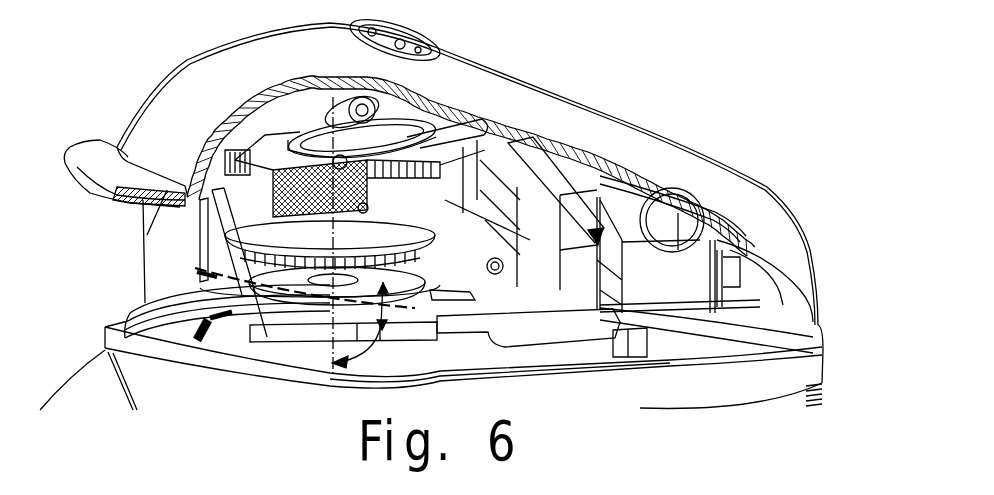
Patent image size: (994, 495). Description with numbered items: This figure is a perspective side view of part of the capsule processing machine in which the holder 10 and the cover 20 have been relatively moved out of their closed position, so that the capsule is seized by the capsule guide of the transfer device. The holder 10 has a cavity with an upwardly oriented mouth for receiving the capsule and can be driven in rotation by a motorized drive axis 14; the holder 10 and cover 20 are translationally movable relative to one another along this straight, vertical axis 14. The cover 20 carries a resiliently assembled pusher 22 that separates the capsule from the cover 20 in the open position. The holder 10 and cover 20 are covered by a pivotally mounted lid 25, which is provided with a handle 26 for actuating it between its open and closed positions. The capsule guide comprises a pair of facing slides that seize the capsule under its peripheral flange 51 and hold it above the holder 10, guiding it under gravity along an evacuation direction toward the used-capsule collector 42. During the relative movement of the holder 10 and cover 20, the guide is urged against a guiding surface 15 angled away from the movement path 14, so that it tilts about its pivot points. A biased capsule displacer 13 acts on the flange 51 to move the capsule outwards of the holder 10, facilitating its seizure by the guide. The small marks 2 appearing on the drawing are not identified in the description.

The base housing 10 is at (200, 333).
The inner bowl 13 is at (290, 317).
The base rim 14 is at (333, 408).
The stepped rim 15 is at (190, 323).
The motor unit 20 is at (390, 172).
The rotating disc 22 is at (363, 207).
The cover 25 is at (235, 72).
The handle 26 is at (105, 160).
The housing 42 is at (658, 287).
The bracket 51 is at (473, 293).
The index 2 is at (455, 360).